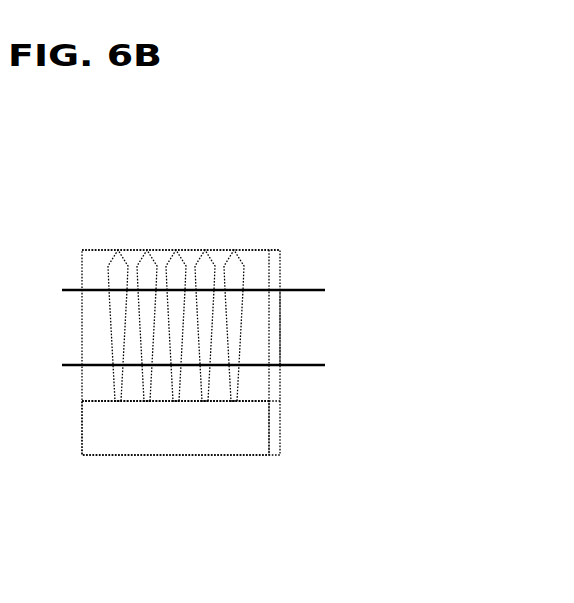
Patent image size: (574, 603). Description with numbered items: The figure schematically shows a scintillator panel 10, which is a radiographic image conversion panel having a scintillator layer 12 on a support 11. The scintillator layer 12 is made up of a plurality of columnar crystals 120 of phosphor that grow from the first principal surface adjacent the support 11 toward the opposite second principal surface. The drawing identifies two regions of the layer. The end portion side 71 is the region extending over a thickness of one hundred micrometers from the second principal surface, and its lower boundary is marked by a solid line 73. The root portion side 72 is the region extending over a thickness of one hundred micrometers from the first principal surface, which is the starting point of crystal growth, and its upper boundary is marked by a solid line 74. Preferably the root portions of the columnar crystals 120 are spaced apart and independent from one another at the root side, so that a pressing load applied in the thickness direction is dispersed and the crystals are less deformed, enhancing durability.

The scintillator panel 10 is at (171, 237).
The columnar crystals 120 is at (238, 262).
The end portion side 71 is at (258, 256).
The solid line indicating lower extremity of end portion side 73 is at (318, 290).
The solid line indicating upper extremity of root portion side 74 is at (302, 365).
The scintillator layer 12 is at (298, 327).
The support 11 is at (199, 428).
The root portion side 72 is at (257, 390).